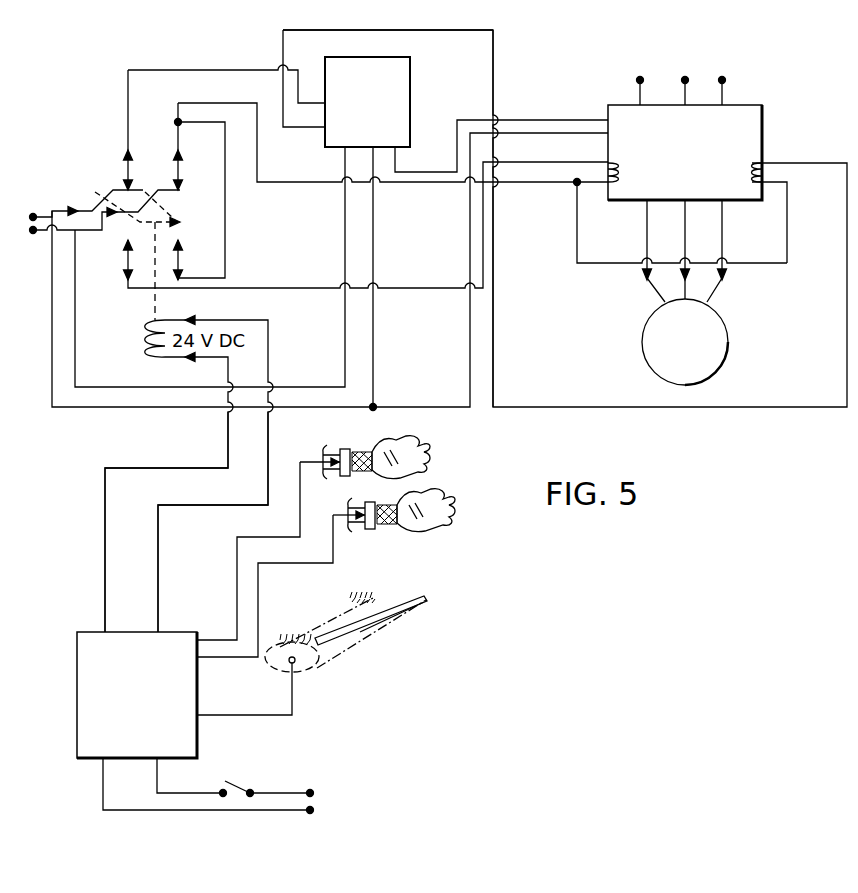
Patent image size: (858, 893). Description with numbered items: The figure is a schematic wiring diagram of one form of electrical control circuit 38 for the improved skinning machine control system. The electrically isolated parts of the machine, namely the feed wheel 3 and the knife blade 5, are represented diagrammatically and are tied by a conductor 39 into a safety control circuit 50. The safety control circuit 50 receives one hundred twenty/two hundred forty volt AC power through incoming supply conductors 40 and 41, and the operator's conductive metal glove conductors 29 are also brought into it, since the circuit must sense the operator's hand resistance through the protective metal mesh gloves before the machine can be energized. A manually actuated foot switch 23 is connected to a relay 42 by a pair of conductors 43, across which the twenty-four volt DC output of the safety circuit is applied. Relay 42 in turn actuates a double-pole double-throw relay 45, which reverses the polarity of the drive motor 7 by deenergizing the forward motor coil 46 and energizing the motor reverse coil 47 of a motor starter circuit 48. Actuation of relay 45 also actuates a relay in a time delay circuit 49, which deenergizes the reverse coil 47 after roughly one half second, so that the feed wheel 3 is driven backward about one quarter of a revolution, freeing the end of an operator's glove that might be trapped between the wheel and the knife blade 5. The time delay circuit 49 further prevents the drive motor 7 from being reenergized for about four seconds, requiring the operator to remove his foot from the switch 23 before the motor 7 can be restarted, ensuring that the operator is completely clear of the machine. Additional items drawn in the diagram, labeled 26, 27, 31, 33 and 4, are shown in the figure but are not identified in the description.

The control circuit 38 is at (532, 90).
The double-pole double-throw relay 45 is at (116, 180).
The relay 42 is at (145, 336).
The time delay circuit 49 is at (398, 66).
The motor starter circuit 48 is at (750, 114).
The forward motor coil 46 is at (621, 186).
The motor reverse coil 47 is at (748, 160).
The drive motor 7 is at (693, 371).
The hand grip 26 is at (345, 476).
The glove fitting 31 is at (370, 451).
The hand grip 27 is at (367, 529).
The glove 33 is at (438, 540).
The glove conductors 29 is at (237, 582).
The conductors 43 is at (196, 505).
The knife blade 5 is at (378, 617).
The feed wheel 3 is at (364, 596).
The conductor 39 is at (294, 691).
The safety control circuit 50 is at (93, 702).
The foot switch 23 is at (239, 785).
The conductor 40 is at (288, 793).
The conductor 41 is at (206, 806).
The power terminals 4 is at (281, 812).